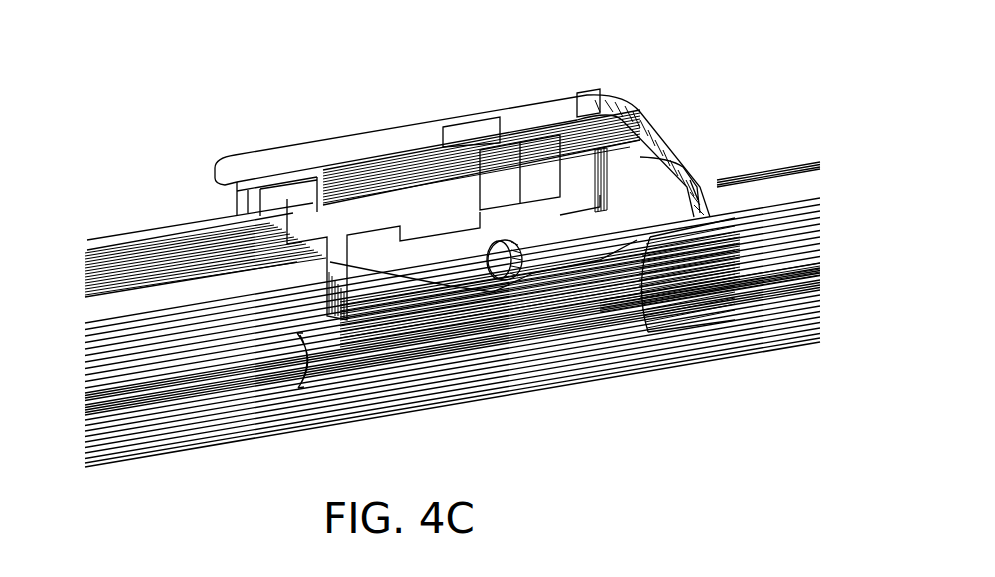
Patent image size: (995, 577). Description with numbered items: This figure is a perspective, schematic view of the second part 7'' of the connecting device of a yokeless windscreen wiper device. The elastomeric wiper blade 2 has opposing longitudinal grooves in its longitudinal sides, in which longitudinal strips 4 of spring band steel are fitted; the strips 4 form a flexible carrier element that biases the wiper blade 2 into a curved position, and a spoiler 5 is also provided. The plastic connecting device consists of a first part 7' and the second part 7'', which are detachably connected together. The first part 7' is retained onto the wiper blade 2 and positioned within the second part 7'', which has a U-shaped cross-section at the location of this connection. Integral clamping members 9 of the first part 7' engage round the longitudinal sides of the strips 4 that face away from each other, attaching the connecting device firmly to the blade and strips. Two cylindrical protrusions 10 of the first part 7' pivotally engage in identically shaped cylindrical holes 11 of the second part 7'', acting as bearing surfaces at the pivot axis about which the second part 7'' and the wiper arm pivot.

The wiper blade 2 is at (213, 447).
The longitudinal strips 4 is at (287, 385).
The spoiler 5 is at (780, 185).
The first part 7' is at (412, 335).
The second part 7'' is at (462, 143).
The clamping members 9 is at (683, 317).
The cylindrical protrusions 10 is at (500, 258).
The cylindrical holes 11 is at (528, 247).